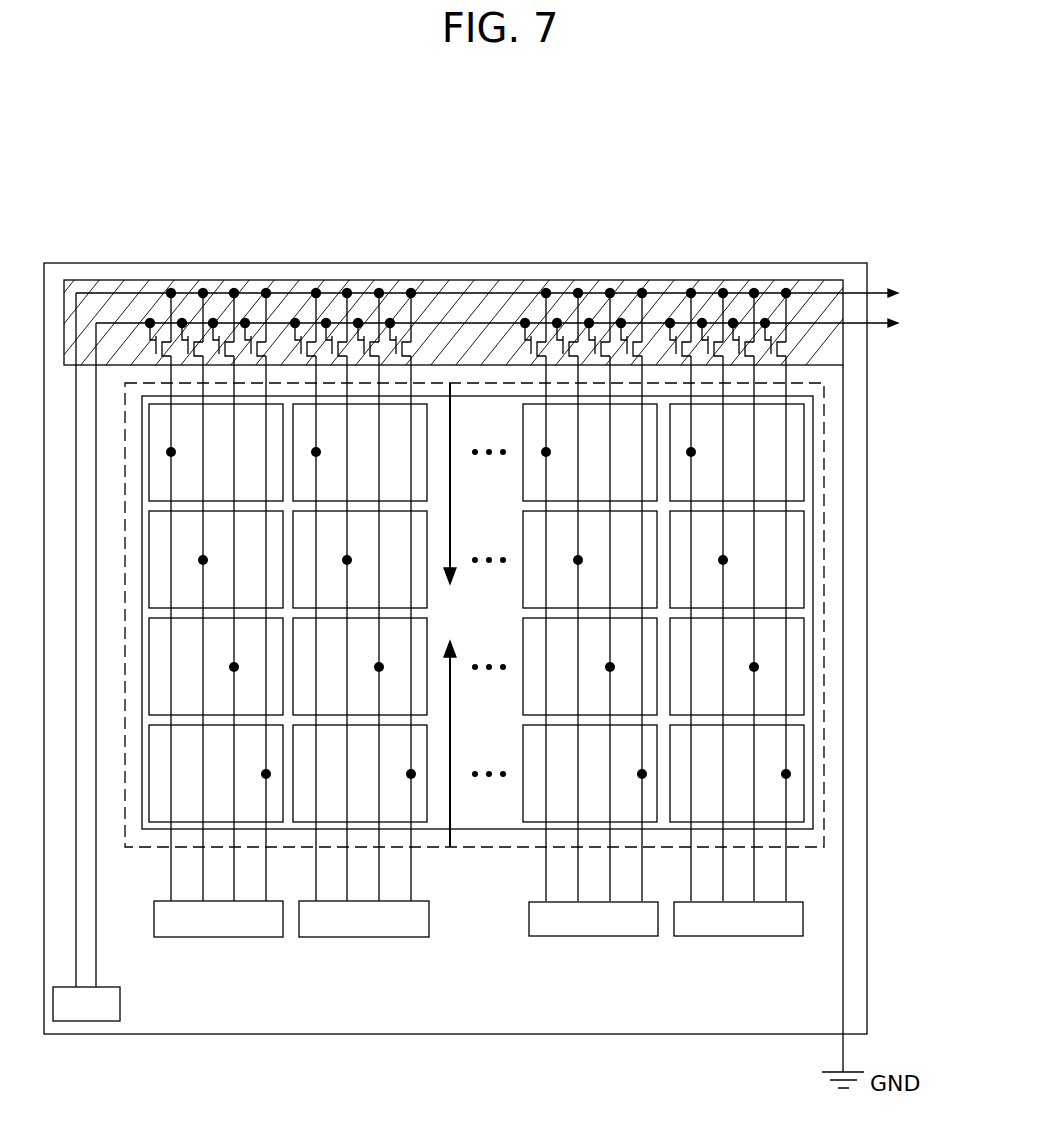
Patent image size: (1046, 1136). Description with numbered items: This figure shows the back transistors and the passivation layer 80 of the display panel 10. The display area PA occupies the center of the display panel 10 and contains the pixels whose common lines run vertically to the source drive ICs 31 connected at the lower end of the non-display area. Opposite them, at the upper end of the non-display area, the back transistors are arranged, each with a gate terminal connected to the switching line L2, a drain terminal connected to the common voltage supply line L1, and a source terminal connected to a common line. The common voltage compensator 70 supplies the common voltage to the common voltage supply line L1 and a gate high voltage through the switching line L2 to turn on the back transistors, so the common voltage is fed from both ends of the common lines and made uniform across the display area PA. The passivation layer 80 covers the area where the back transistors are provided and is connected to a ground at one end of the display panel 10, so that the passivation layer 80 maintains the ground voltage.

The display panel 10 is at (450, 1034).
The source drive IC 31 is at (785, 968).
The common voltage compensator 70 is at (120, 1003).
The passivation layer 80 is at (470, 280).
The common voltage supply line L1 is at (78, 292).
The switching line L2 is at (120, 322).
The display area PA is at (824, 551).